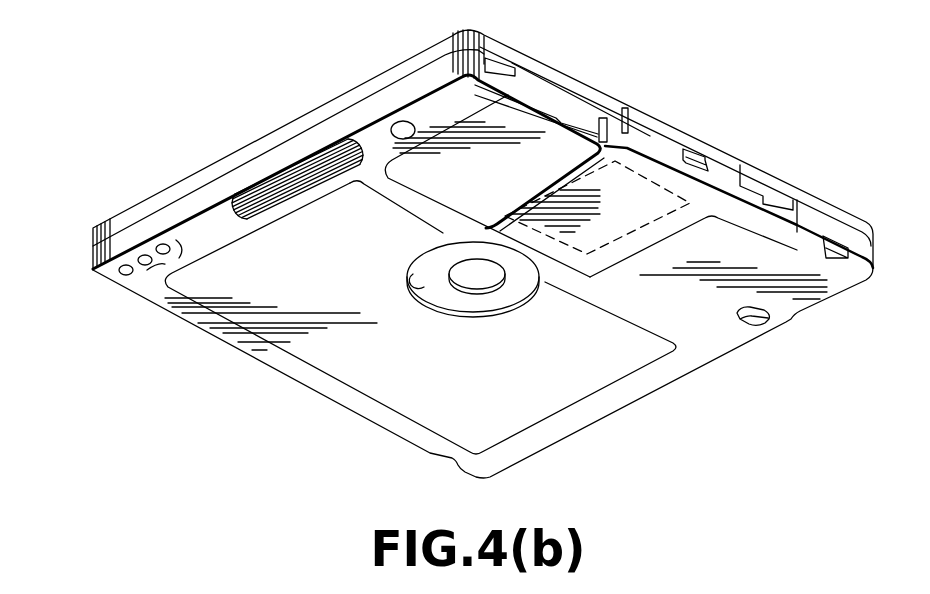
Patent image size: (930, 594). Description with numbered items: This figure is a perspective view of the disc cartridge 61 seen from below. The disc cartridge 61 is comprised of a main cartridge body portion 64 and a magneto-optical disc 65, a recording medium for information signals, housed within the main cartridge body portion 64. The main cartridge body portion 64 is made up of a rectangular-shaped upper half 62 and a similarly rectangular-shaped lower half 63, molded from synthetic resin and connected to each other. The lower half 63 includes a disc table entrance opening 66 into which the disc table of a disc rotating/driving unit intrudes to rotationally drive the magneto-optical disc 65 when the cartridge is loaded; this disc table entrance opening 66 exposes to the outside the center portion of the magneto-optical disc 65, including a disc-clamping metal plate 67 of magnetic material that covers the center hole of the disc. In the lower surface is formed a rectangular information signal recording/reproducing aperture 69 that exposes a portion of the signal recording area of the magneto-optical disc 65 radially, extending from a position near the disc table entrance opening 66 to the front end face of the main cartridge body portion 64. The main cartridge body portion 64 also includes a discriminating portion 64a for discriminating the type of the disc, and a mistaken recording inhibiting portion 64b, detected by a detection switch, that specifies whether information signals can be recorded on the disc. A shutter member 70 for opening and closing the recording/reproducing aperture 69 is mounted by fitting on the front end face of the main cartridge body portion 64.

The disc cartridge 61 is at (282, 387).
The upper half 62 is at (232, 165).
The lower half 63 is at (242, 85).
The main cartridge body portion 64 is at (280, 138).
The discriminating portion 64a is at (179, 261).
The mistaken recording inhibiting portion 64b is at (125, 276).
The magneto-optical disc 65 is at (456, 290).
The disc table entrance opening 66 is at (427, 300).
The disc-clamping metal plate 67 is at (483, 272).
The information signal recording/reproducing aperture 69 is at (653, 217).
The shutter member 70 is at (658, 130).